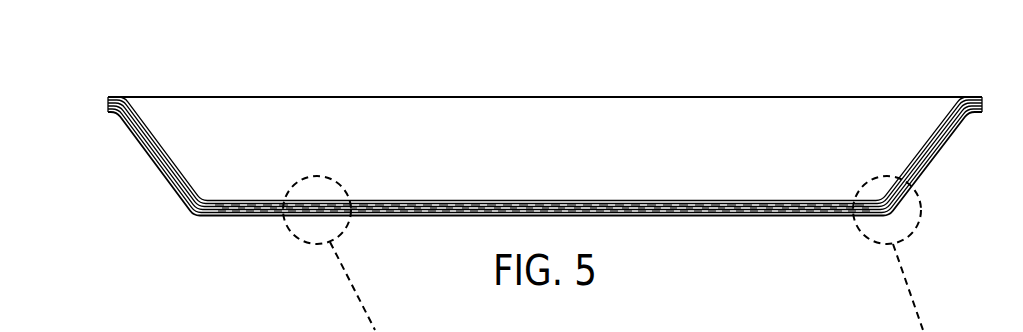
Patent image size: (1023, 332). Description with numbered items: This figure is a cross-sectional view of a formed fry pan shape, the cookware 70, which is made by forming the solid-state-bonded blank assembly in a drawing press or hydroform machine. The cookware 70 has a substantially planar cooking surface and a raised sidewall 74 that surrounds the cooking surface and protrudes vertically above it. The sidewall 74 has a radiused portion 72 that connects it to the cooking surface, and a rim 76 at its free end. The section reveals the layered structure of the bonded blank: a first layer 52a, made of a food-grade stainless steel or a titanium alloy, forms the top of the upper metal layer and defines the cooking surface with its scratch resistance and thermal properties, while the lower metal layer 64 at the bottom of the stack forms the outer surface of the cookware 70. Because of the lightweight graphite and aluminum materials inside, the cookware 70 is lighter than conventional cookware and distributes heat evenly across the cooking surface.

The cookware 70 is at (731, 62).
The rim 76 is at (108, 101).
The first layer 52a is at (247, 200).
The sidewall 74 is at (151, 163).
The radiused portion 72 is at (195, 217).
The lower metal layer 64 is at (247, 217).